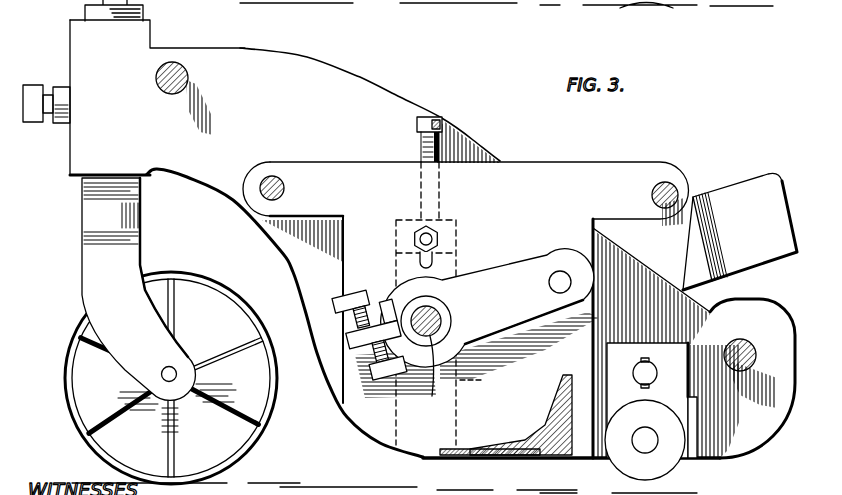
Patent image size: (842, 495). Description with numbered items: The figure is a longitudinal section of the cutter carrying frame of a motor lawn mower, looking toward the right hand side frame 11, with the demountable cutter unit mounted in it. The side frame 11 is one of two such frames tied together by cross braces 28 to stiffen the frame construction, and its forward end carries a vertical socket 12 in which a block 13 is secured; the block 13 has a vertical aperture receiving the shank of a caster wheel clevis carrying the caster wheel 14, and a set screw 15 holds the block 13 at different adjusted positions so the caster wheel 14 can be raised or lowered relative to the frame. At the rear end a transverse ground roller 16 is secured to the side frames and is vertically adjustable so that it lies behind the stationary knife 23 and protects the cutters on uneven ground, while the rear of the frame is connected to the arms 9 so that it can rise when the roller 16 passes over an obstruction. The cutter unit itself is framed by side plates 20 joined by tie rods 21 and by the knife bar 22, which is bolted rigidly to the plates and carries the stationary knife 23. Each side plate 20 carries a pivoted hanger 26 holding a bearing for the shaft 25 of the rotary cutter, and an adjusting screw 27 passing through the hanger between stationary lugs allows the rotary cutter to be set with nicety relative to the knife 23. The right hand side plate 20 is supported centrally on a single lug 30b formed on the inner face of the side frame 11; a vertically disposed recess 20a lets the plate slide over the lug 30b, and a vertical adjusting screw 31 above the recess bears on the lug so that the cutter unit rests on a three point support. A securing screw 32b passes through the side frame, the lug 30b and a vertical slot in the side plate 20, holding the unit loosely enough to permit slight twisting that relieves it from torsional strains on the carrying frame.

The arm 9 is at (740, 231).
The side frame 11 is at (300, 65).
The vertical socket 12 is at (70, 152).
The block 13 is at (80, 186).
The caster wheel 14 is at (253, 440).
The set screw 15 is at (36, 85).
The ground roller 16 is at (627, 467).
The side plate 20 is at (466, 190).
The vertically disposed recess 20a is at (488, 380).
The tie rod 21 is at (278, 180).
The knife bar 22 is at (557, 453).
The stationary knife 23 is at (452, 460).
The shaft 25 is at (436, 374).
The pivoted hanger 26 is at (476, 323).
The adjusting screw 27 is at (347, 333).
The cross brace 28 is at (176, 94).
The lug 30b is at (434, 254).
The vertically disposed adjusting screw 31 is at (440, 120).
The securing screw 32b is at (442, 233).